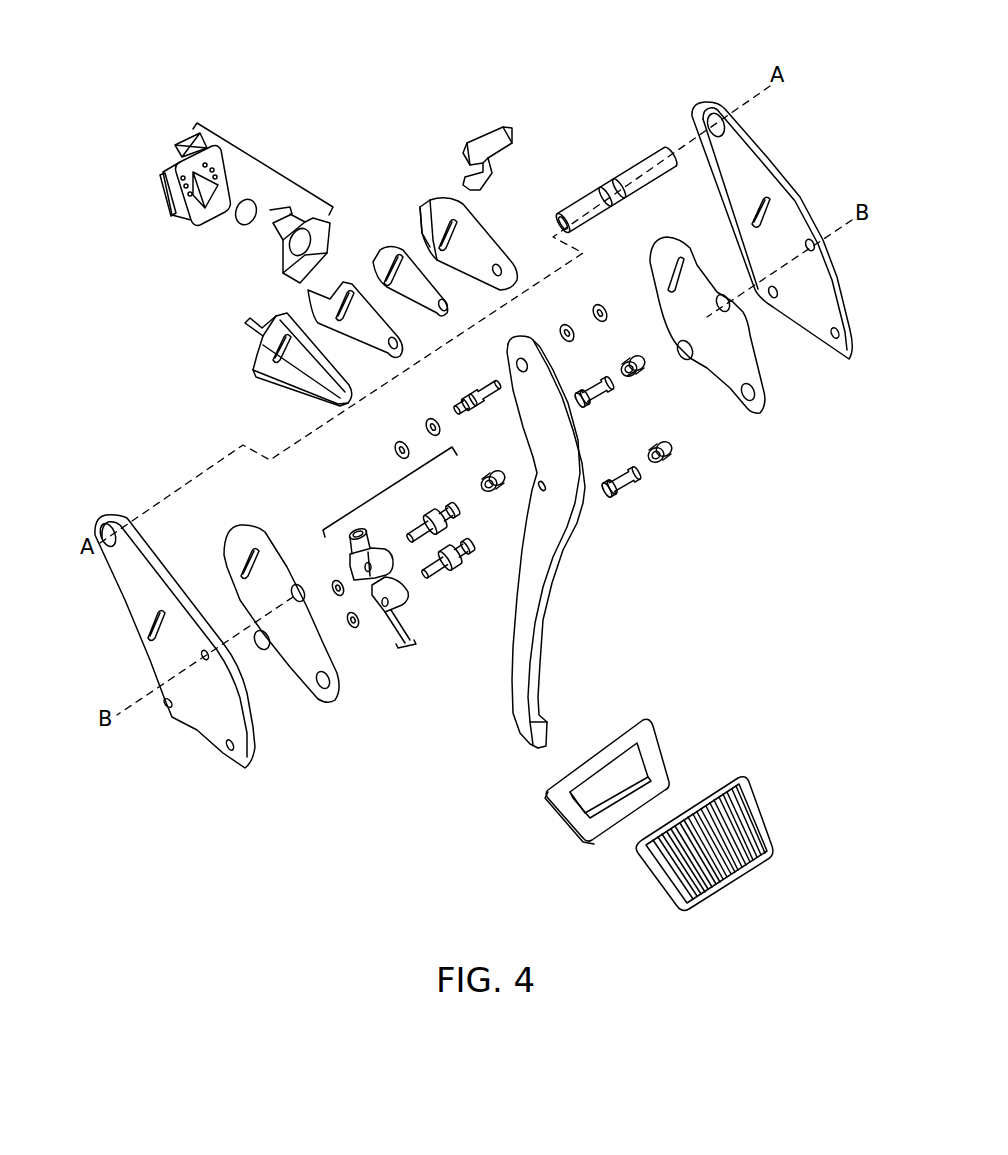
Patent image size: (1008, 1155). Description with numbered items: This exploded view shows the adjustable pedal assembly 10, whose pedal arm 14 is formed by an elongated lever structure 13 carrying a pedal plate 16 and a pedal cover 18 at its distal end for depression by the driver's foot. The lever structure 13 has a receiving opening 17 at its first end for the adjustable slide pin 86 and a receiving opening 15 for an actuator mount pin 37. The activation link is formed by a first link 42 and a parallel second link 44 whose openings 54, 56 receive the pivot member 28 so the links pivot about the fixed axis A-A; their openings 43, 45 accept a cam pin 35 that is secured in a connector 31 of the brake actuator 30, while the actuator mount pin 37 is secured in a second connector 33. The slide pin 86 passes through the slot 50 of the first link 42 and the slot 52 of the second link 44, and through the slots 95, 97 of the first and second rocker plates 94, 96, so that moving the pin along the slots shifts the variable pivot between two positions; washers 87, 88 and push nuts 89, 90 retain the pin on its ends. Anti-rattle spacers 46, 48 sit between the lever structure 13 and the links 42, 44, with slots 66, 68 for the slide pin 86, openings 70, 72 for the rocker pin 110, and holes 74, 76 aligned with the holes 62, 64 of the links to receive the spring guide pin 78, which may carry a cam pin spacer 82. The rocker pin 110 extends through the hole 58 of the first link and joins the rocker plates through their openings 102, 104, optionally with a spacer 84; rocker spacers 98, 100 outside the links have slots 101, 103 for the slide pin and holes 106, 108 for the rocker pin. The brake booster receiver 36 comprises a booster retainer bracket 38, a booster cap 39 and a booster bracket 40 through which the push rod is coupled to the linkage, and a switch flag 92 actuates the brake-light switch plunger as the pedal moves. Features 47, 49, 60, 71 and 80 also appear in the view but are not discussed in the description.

The pedal assembly 10 is at (663, 70).
The elongated lever structure 13 is at (530, 626).
The pedal arm 14 is at (510, 675).
The receiving opening 15 is at (546, 492).
The pedal plate 16 is at (566, 822).
The receiving opening 17 is at (515, 364).
The pedal cover 18 is at (660, 880).
The pivot member 28 is at (625, 172).
The brake actuator 30 is at (385, 490).
The connector 31 is at (378, 550).
The connector 33 is at (408, 600).
The cam pin 35 is at (448, 512).
The brake booster receiver 36 is at (268, 166).
The actuator mount pin 37 is at (468, 560).
The booster retainer bracket 38 is at (182, 220).
The booster cap 39 is at (238, 226).
The booster bracket 40 is at (275, 258).
The first link 42 is at (209, 735).
The opening 43 is at (165, 710).
The second link 44 is at (848, 358).
The opening 45 is at (779, 292).
The anti-rattle spacer 46 is at (302, 692).
The hole 47 is at (264, 651).
The anti-rattle spacer 48 is at (745, 353).
The hole 49 is at (686, 361).
The slot 50 is at (150, 633).
The slot 52 is at (770, 203).
The opening 54 is at (112, 528).
The opening 56 is at (712, 118).
The hole 58 is at (207, 650).
The hole 60 is at (816, 246).
The first hole 62 is at (232, 752).
The second hole 64 is at (831, 341).
The slot 66 is at (245, 555).
The slot 68 is at (668, 270).
The opening 70 is at (298, 584).
The washers 71 is at (354, 630).
The opening 72 is at (720, 295).
The hole 74 is at (330, 685).
The hole 76 is at (752, 398).
The spring guide pin 78 is at (622, 485).
The bushing 80 is at (497, 470).
The cam pin spacer 82 is at (673, 448).
The spacer 84 is at (629, 360).
The adjustable slide pin 86 is at (462, 400).
The washer 87 is at (429, 420).
The washer 88 is at (566, 325).
The push nut 89 is at (398, 443).
The push nut 90 is at (600, 305).
The switch flag 92 is at (470, 150).
The first rocker plate 94 is at (270, 383).
The slot 95 is at (268, 353).
The second rocker plate 96 is at (490, 240).
The slot 97 is at (440, 228).
The rocker spacer 98 is at (318, 303).
The rocker spacer 100 is at (415, 310).
The slot 101 is at (345, 298).
The opening 102 is at (325, 388).
The slot 103 is at (388, 262).
The opening 104 is at (504, 269).
The hole 106 is at (388, 349).
The hole 108 is at (450, 305).
The rocker pin 110 is at (598, 398).